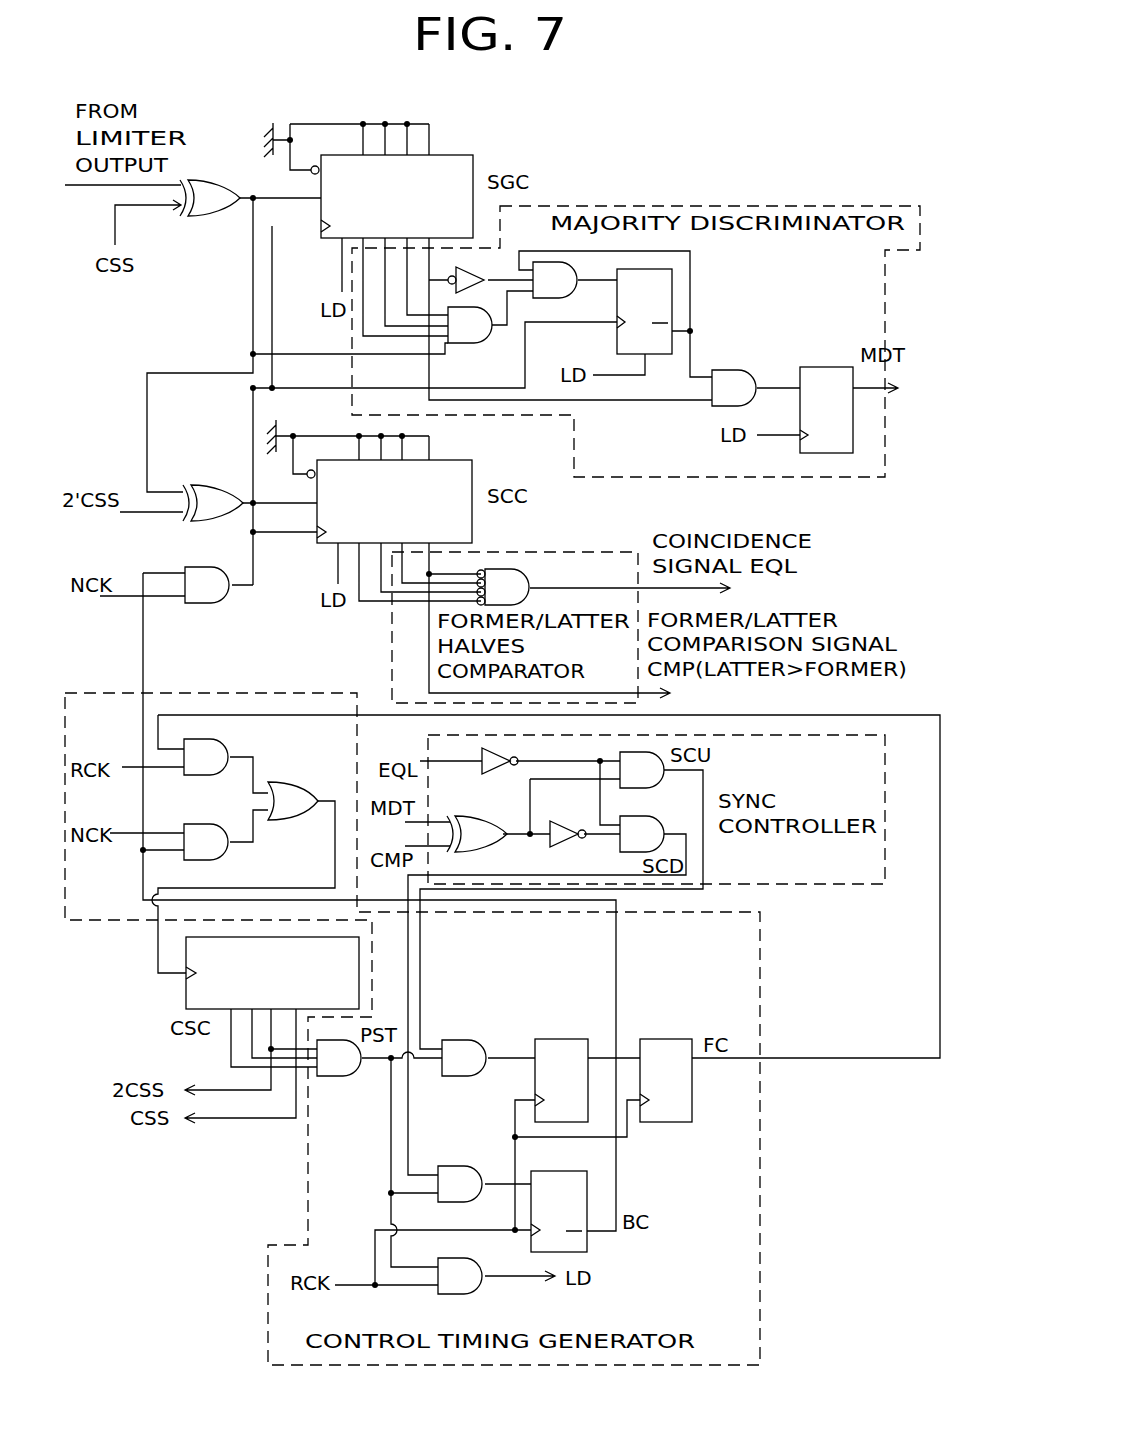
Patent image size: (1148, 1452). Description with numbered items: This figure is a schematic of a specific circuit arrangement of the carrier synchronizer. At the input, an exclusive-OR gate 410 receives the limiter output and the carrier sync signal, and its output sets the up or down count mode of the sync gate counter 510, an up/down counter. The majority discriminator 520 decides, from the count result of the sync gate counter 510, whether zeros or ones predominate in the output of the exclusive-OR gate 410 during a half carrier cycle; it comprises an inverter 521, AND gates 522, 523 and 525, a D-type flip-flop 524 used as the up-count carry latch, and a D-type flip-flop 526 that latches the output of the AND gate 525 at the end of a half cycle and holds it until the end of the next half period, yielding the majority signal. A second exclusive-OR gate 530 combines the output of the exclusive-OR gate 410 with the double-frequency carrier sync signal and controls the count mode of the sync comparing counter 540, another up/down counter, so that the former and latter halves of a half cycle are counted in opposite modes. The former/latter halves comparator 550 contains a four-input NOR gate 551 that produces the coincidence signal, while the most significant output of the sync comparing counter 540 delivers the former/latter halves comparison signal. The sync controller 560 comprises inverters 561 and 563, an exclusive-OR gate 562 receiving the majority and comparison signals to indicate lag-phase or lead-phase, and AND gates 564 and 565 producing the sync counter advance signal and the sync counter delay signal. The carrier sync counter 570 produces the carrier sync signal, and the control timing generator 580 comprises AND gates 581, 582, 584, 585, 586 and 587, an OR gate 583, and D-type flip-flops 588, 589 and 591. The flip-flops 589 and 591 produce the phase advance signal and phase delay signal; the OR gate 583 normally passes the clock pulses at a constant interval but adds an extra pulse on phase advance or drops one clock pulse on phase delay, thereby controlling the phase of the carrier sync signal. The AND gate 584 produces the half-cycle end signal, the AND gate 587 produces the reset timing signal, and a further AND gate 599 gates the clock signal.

The exclusive-OR gate 410 is at (208, 216).
The sync gate counter 510 is at (455, 155).
The majority discriminator 520 is at (720, 206).
The inverter 521 is at (482, 268).
The AND gate 522 is at (475, 343).
The AND gate 523 is at (548, 298).
The D-type flip-flop 524 is at (664, 354).
The AND gate 525 is at (735, 370).
The D-type flip-flop 526 is at (832, 367).
The exclusive-OR gate 530 is at (205, 485).
The sync comparing counter 540 is at (455, 460).
The former/latter halves comparator 550 is at (540, 552).
The 4-input NOR gate 551 is at (520, 569).
The sync controller 560 is at (885, 770).
The inverter 561 is at (500, 774).
The exclusive-OR gate 562 is at (510, 857).
The inverter 563 is at (570, 847).
The AND gate 564 is at (628, 752).
The AND gate 565 is at (630, 816).
The carrier sync counter 570 is at (186, 1000).
The control timing generator 580 is at (760, 1305).
The AND gate 581 is at (210, 739).
The AND gate 582 is at (224, 858).
The OR gate 583 is at (290, 782).
The AND gate 584 is at (345, 1076).
The AND gate 585 is at (465, 1040).
The AND gate 586 is at (455, 1166).
The AND gate 587 is at (452, 1258).
The D-type flip-flop 588 is at (565, 1039).
The D-type flip-flop 589 is at (670, 1039).
The D-type flip-flop 591 is at (590, 1245).
The AND gate 599 is at (210, 603).